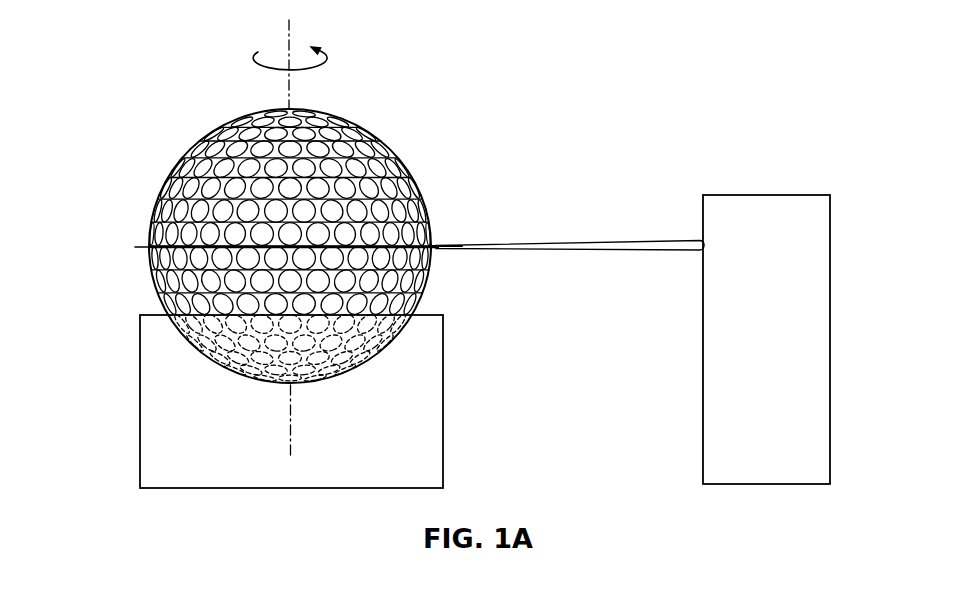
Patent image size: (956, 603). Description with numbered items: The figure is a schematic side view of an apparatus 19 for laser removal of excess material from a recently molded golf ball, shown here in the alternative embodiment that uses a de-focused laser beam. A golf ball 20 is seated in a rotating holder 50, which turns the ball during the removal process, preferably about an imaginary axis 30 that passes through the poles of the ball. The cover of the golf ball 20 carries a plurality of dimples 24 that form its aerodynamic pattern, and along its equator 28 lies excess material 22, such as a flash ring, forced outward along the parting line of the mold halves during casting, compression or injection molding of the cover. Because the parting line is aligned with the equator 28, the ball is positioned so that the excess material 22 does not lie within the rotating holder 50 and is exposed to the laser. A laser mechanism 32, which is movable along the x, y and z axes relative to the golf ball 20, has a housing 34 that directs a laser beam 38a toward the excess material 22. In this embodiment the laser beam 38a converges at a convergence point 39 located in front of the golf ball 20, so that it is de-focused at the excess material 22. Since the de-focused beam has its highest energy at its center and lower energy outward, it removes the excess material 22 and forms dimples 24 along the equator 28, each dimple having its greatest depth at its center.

The apparatus for laser removal of excess material 19 is at (590, 146).
The golf ball 20 is at (163, 126).
The excess material 22 is at (438, 252).
The dimples 24 is at (384, 129).
The equator 28 is at (148, 245).
The imaginary axis 30 is at (289, 23).
The laser mechanism 32 is at (782, 176).
The housing 34 is at (708, 427).
The de-focused laser beam 38a is at (620, 251).
The convergence point 39 is at (458, 243).
The rotating holder 50 is at (148, 385).